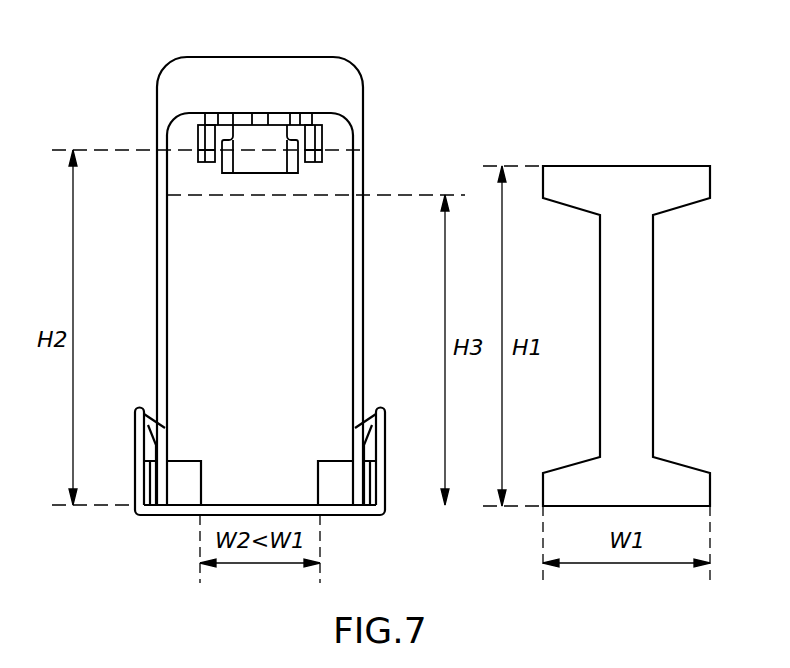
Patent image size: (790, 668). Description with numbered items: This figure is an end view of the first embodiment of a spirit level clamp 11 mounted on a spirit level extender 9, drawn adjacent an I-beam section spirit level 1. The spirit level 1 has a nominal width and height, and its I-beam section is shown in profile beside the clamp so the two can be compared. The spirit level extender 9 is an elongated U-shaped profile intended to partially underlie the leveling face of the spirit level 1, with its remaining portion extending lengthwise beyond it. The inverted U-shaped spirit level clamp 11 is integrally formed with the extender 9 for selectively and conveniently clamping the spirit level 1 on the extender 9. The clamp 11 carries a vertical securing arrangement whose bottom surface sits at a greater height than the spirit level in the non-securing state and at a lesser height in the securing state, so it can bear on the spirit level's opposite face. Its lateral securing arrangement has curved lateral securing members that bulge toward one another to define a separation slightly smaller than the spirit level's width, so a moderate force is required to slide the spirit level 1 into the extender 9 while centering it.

The spirit level 1 is at (645, 133).
The spirit level extender 9 is at (148, 515).
The spirit level clamp 11 is at (278, 57).